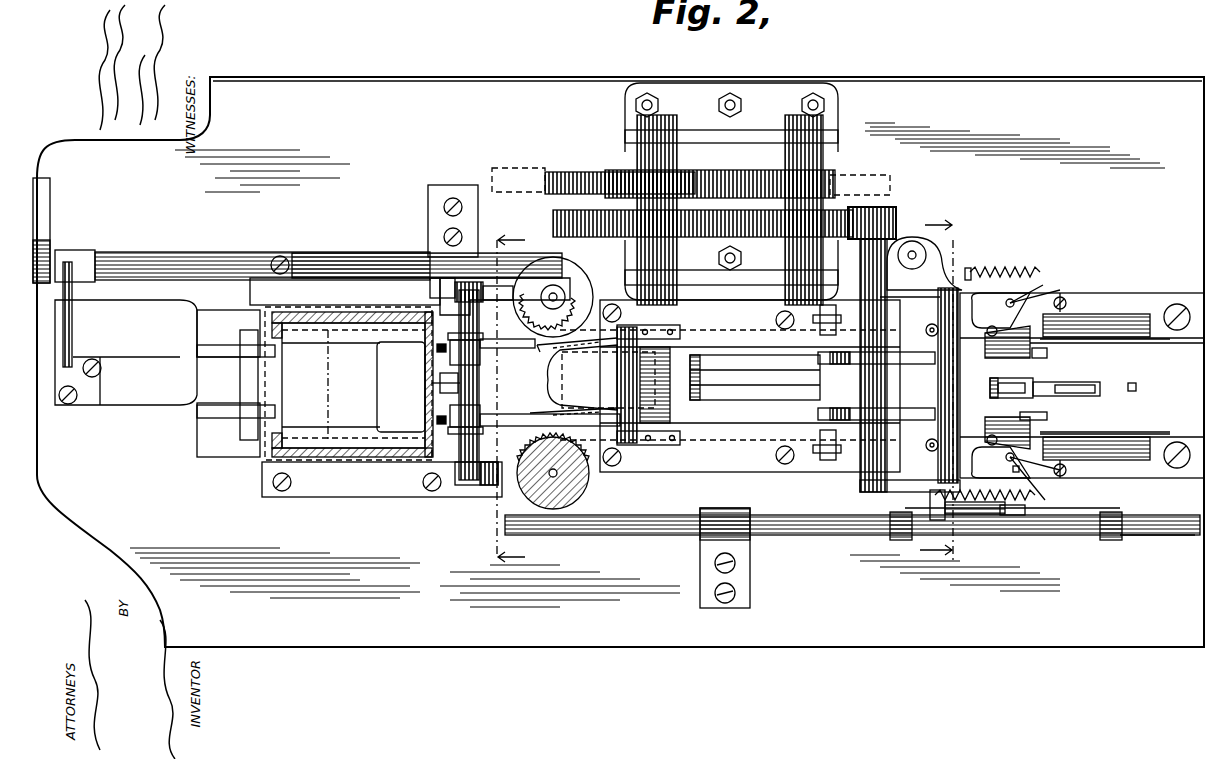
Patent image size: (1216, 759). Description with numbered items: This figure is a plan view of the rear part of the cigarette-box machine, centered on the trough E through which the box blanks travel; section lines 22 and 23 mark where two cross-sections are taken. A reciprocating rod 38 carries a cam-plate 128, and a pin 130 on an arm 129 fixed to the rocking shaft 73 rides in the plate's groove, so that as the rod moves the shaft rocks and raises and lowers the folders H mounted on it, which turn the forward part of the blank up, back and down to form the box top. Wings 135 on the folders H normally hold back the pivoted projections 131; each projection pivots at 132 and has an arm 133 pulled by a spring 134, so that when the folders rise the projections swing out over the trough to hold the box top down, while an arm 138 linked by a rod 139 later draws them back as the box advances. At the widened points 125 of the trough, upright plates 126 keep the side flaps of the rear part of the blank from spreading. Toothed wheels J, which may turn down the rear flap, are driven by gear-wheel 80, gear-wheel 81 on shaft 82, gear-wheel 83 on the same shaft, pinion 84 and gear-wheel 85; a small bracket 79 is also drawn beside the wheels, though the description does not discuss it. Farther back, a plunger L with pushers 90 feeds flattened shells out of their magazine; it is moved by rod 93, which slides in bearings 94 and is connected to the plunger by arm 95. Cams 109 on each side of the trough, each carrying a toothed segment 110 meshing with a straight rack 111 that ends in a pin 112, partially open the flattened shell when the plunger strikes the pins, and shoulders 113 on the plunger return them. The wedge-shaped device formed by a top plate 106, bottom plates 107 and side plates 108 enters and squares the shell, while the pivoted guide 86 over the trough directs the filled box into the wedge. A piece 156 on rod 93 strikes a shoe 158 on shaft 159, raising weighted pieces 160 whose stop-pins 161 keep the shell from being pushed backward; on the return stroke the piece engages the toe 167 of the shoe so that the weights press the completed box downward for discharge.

The section lines 22 is at (935, 382).
The section lines 23 is at (514, 399).
The rod 38 is at (780, 535).
The rocking shaft 73 is at (960, 400).
The bracket 79 is at (835, 382).
The gear-wheel 80 is at (568, 172).
The gear-wheel 81 is at (690, 180).
The shaft 82 is at (662, 135).
The gear-wheel 83 is at (690, 237).
The pinion 84 is at (838, 212).
The gear-wheel 85 is at (893, 212).
The upper plate or guide 86 is at (755, 377).
The pushers 90 is at (205, 405).
The rod 93 is at (180, 252).
The bearings 94 is at (50, 242).
The arm 95 is at (72, 332).
The top plate 106 is at (614, 385).
The bottom plates 107 is at (577, 348).
The side plates 108 is at (573, 413).
The cams 109 is at (578, 278).
The toothed segment 110 is at (540, 298).
The straight rack 111 is at (482, 508).
The pin 112 is at (400, 333).
The shoulders 113 is at (403, 330).
The widened points of trough 125 is at (1120, 320).
The upright plate 126 is at (1155, 340).
The cam-plate 128 is at (1125, 515).
The arm 129 is at (980, 515).
The pin 130 is at (1008, 515).
The projections 131 is at (1005, 300).
The pivot 132 is at (1020, 303).
The arm 133 is at (1045, 285).
The spring 134 is at (990, 272).
The wings 135 is at (1005, 342).
The arm 138 is at (926, 330).
The rod 139 is at (988, 333).
The piece 156 is at (318, 290).
The shoe 158 is at (470, 290).
The shaft 159 is at (460, 335).
The weighted pieces 160 is at (483, 362).
The stop-pin 161 is at (437, 348).
The toe 167 is at (455, 285).
The plunger L is at (126, 352).
The toothed wheels J is at (893, 410).
The folders H is at (1046, 379).
The trough E is at (1082, 385).